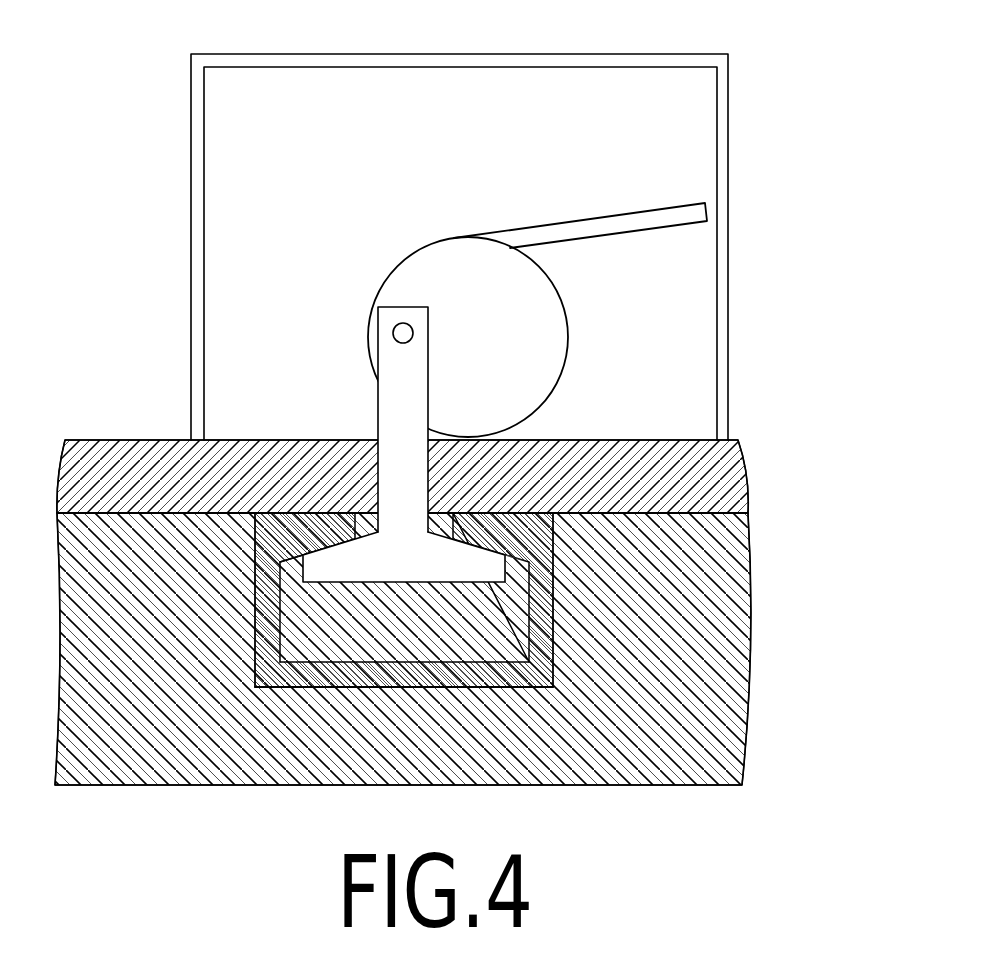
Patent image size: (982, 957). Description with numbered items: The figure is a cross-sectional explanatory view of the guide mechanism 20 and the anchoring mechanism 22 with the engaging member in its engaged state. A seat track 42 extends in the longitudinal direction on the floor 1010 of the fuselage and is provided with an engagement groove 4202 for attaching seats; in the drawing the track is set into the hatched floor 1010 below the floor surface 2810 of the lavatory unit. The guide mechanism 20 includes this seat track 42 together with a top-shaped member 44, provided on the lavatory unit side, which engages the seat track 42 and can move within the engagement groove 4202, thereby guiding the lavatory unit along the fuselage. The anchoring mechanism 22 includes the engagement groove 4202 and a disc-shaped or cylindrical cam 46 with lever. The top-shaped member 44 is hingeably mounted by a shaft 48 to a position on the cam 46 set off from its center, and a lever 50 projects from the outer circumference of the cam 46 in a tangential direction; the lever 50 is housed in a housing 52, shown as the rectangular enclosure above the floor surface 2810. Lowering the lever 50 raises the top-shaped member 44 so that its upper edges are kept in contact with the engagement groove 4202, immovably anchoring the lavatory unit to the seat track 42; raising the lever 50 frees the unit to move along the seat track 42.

The guide mechanism 20 is at (490, 689).
The anchoring mechanism 22 is at (597, 393).
The seat track 42 is at (252, 538).
The engagement groove 4202 is at (337, 550).
The top-shaped member 44 is at (333, 556).
The cam 46 is at (562, 297).
The shaft 48 is at (393, 333).
The lever 50 is at (637, 211).
The housing 52 is at (735, 117).
The floor 1010 is at (680, 603).
The floor surface 2810 is at (682, 460).